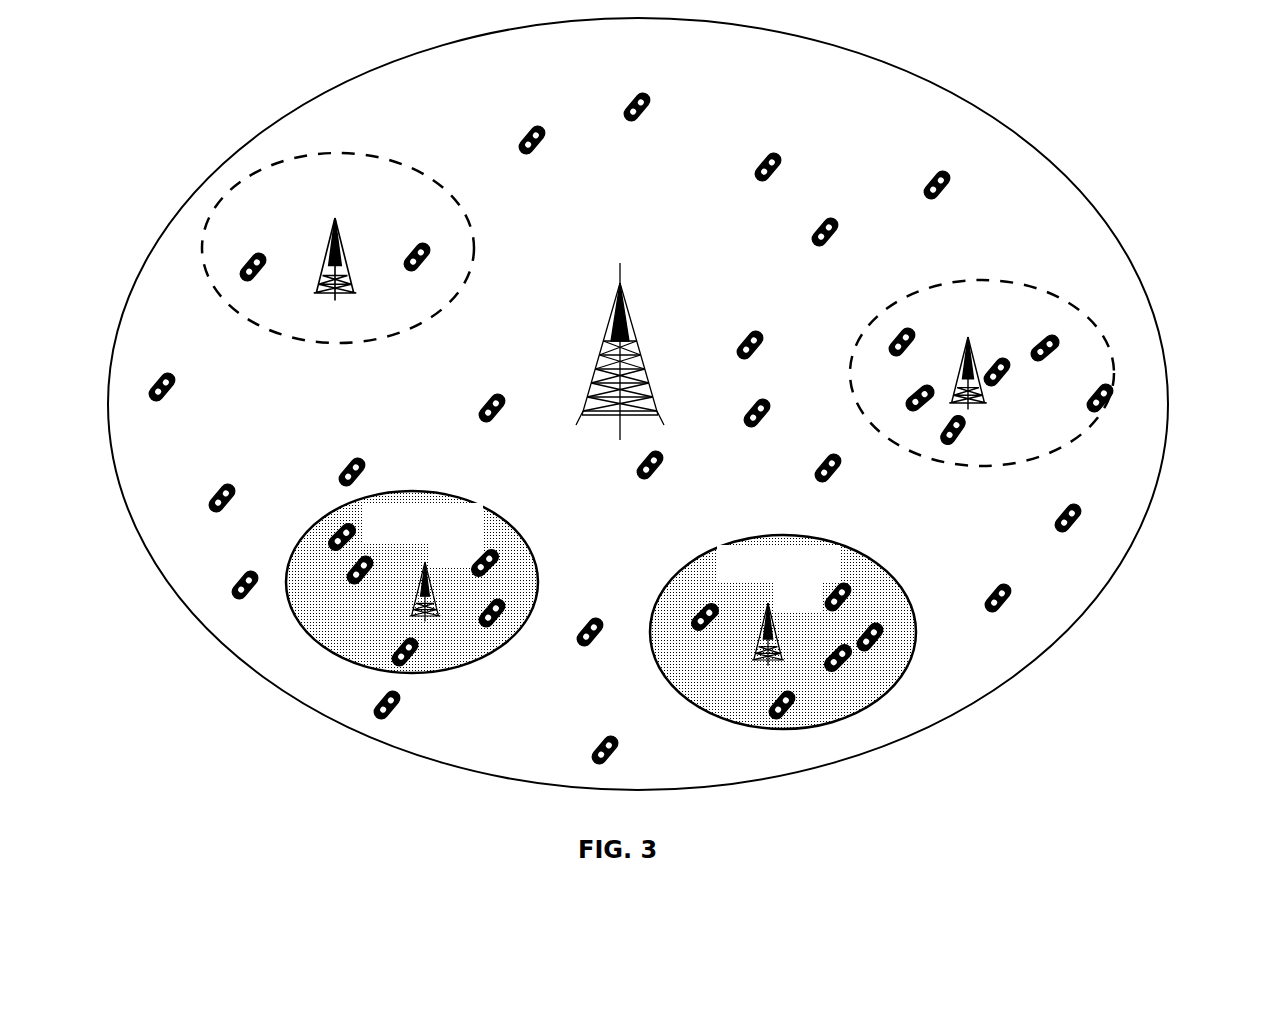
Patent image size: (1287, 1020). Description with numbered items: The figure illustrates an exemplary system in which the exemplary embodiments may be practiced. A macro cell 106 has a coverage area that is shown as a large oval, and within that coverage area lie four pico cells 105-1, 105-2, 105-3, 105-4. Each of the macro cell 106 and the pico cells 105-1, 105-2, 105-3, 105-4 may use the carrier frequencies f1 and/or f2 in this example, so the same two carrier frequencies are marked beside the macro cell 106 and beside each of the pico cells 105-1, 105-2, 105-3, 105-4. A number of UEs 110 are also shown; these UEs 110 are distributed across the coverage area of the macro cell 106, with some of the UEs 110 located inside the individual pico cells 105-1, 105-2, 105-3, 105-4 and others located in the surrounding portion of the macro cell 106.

The macro cell 106 is at (945, 112).
The pico cell 105-1 is at (291, 146).
The pico cell 105-2 is at (1086, 298).
The pico cell 105-3 is at (309, 650).
The pico cell 105-4 is at (868, 720).
The UEs 110 is at (645, 113).